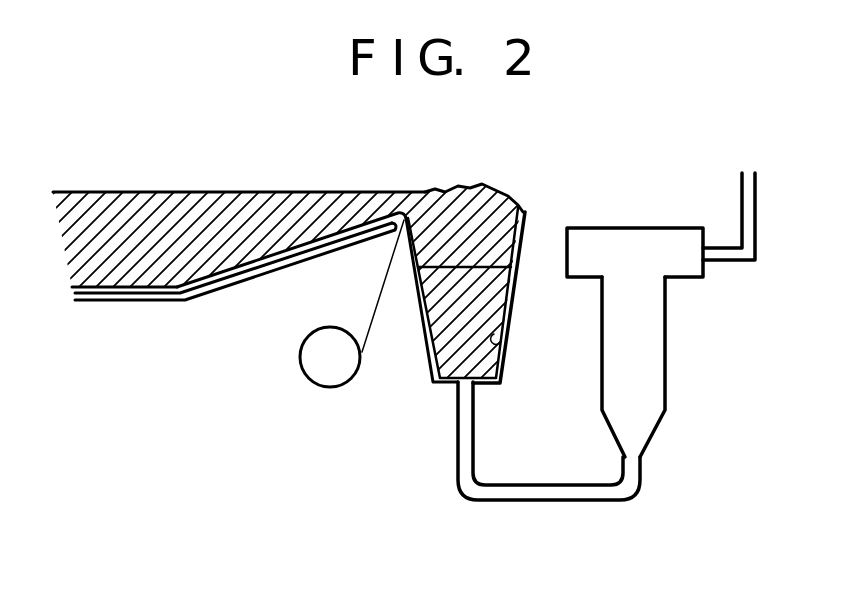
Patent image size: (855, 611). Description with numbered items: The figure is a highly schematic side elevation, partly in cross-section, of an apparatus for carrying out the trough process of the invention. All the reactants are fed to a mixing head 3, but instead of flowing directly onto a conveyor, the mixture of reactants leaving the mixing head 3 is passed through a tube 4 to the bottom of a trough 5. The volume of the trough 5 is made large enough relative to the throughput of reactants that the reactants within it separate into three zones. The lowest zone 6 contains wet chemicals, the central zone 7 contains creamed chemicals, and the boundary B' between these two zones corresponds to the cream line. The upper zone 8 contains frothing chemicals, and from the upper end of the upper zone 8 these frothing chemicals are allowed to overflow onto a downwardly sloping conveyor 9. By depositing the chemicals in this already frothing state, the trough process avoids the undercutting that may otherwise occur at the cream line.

The mixing head 3 is at (653, 347).
The tube 4 is at (545, 495).
The trough 5 is at (500, 369).
The lowest zone 6 is at (452, 359).
The central zone 7 is at (492, 302).
The upper zone 8 is at (507, 203).
The downwardly sloping conveyor 9 is at (257, 273).
The boundary between zones 6 and 7 B' is at (523, 347).